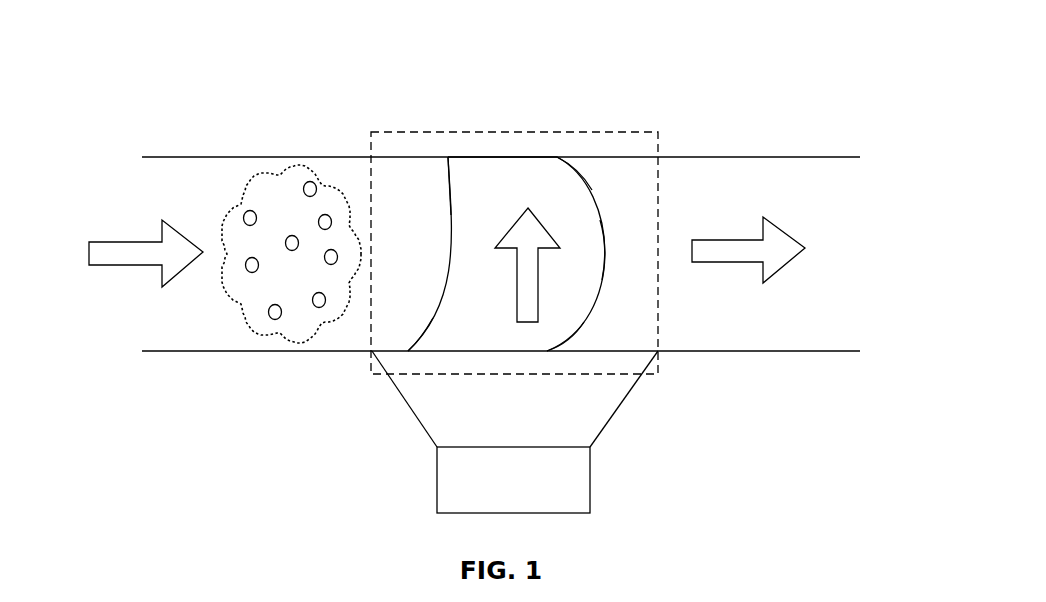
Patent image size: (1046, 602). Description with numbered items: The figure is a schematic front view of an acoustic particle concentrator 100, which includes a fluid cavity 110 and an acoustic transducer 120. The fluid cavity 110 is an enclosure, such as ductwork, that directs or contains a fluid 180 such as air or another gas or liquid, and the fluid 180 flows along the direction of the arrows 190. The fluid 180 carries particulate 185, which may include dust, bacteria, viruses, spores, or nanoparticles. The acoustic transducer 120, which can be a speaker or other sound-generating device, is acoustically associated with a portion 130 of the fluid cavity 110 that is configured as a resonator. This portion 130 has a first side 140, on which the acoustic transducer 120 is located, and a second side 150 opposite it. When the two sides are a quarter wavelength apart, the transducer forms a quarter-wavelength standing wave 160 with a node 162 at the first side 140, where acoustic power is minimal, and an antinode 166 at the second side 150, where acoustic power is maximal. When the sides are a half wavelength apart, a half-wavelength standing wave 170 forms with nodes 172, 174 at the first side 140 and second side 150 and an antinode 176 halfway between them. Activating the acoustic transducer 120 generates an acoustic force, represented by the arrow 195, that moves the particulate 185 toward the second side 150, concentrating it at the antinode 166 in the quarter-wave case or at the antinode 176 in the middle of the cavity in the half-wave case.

The acoustic particle concentrator 100 is at (690, 60).
The fluid cavity 110 is at (177, 157).
The acoustic transducer 120 is at (437, 492).
The portion of the fluid cavity 130 is at (385, 132).
The first side of the portion of the fluid cavity 140 is at (452, 362).
The second side of the portion of the fluid cavity 150 is at (487, 147).
The quarter-wavelength standing wave 160 is at (448, 268).
The node 162 is at (402, 354).
The antinode 166 is at (446, 155).
The half-wavelength standing wave 170 is at (597, 195).
The node 172 is at (554, 354).
The node 174 is at (550, 155).
The antinode 176 is at (609, 240).
The fluid 180 is at (300, 170).
The particulate 185 is at (291, 301).
The arrows 190 is at (143, 267).
The arrow 195 is at (540, 293).